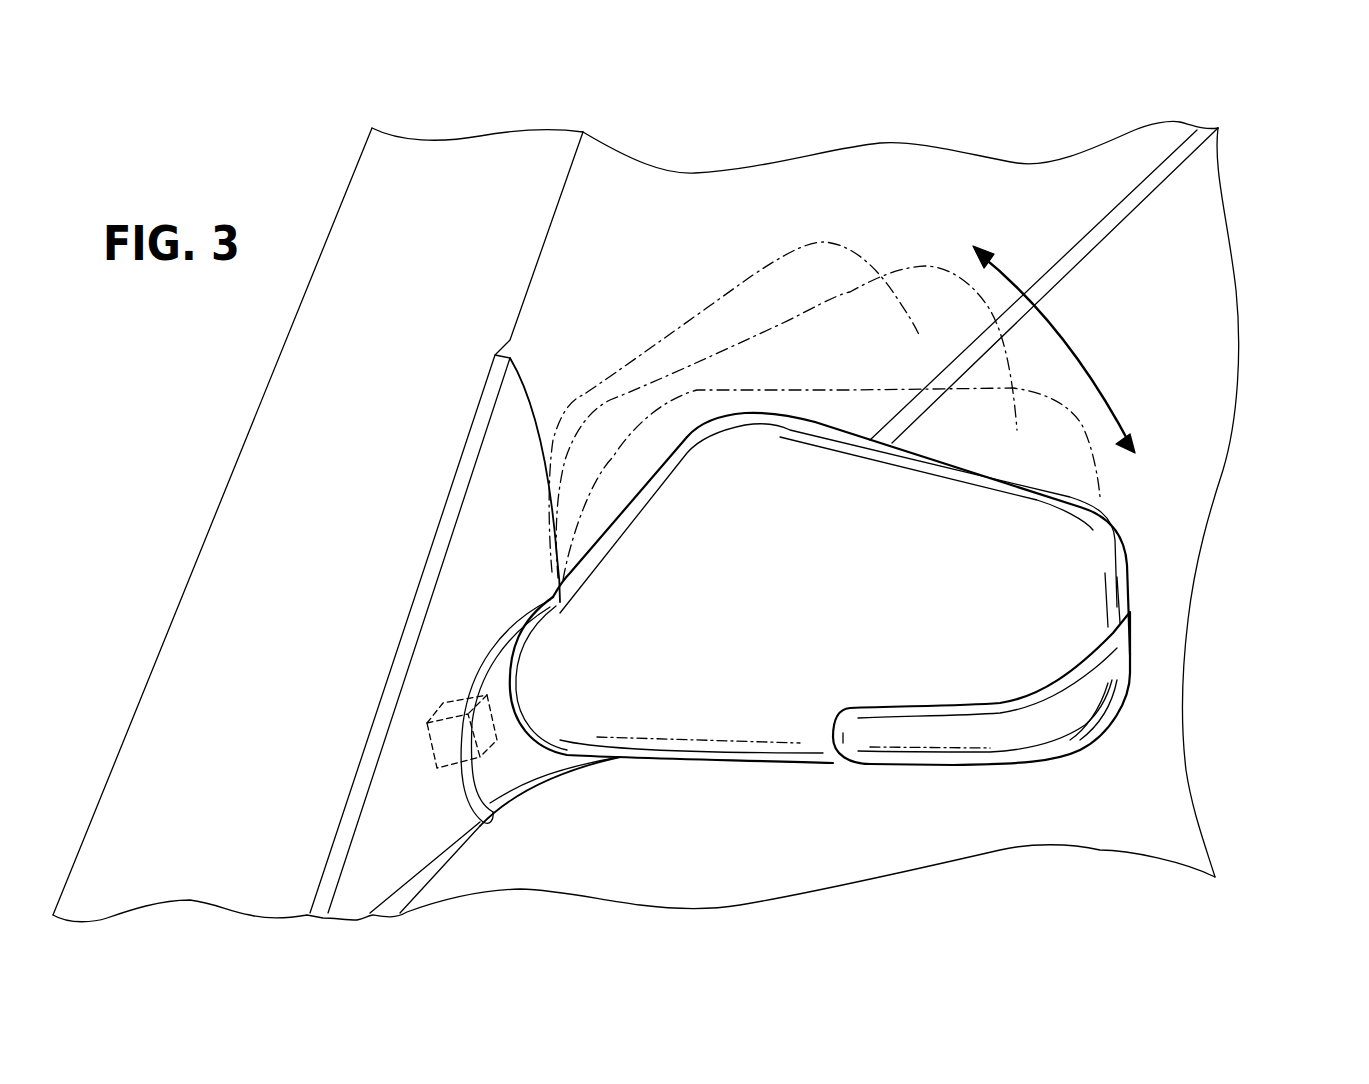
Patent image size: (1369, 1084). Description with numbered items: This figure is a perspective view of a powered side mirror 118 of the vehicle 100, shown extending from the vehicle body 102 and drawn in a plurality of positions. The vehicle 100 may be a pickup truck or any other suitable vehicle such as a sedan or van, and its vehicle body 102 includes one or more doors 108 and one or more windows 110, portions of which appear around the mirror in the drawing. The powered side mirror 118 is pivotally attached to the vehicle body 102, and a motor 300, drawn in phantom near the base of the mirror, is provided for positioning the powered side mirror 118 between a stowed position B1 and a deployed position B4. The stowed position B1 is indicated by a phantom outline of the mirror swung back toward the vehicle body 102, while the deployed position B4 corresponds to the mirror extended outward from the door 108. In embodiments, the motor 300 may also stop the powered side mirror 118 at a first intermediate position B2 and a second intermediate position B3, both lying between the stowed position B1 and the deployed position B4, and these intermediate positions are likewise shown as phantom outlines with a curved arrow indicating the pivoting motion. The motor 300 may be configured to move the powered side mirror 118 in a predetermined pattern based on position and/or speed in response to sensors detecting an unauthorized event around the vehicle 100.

The vehicle 100 is at (1315, 119).
The vehicle body 102 is at (500, 154).
The door 108 is at (1175, 522).
The window 110 is at (787, 182).
The powered side mirror 118 is at (758, 711).
The motor 300 is at (447, 770).
The stowed position B1 is at (858, 258).
The first intermediate position B2 is at (1017, 375).
The second intermediate position B3 is at (1110, 497).
The deployed position B4 is at (1130, 588).